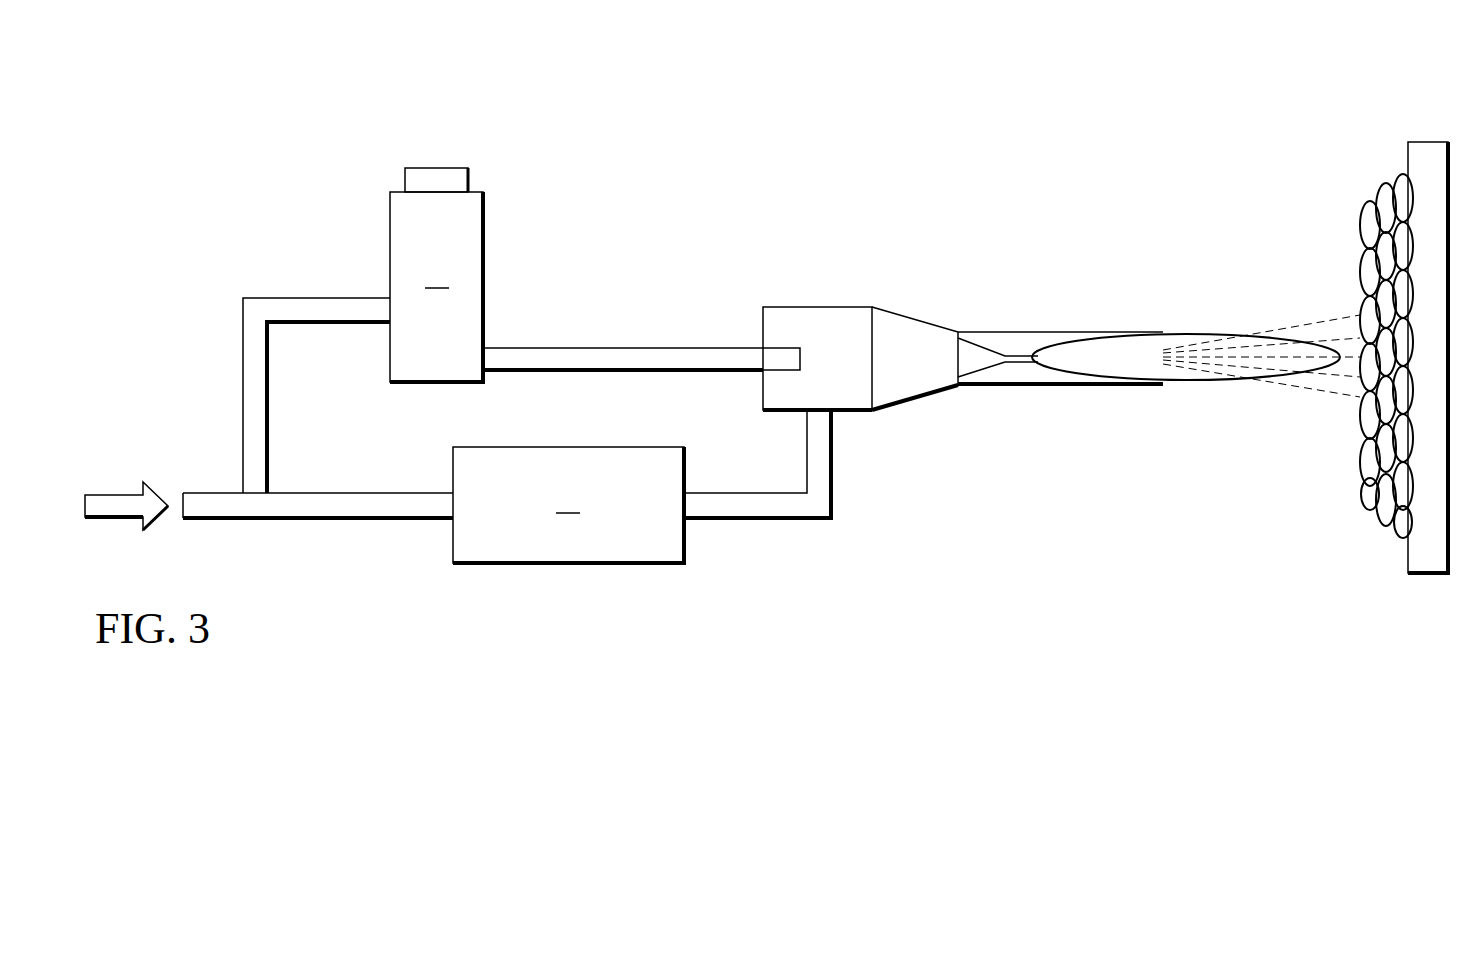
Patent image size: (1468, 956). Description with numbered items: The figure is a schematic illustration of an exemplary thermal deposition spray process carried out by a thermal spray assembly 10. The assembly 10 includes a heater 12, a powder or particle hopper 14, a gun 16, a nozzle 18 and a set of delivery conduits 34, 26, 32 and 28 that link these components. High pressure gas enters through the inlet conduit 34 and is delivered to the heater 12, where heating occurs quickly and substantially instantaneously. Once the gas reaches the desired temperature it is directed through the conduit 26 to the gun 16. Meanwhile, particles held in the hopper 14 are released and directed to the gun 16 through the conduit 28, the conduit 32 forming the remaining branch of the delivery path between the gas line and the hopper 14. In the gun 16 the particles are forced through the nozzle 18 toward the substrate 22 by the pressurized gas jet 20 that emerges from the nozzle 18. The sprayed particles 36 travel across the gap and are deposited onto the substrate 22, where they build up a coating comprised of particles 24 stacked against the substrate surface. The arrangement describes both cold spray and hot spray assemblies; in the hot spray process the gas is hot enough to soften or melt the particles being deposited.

The thermal spray assembly 10 is at (1142, 115).
The heater 12 is at (568, 505).
The powder or particle hopper 14 is at (436, 275).
The gun 16 is at (900, 393).
The nozzle 18 is at (1012, 378).
The pressurized gas jet 20 is at (1123, 347).
The substrate 22 is at (1408, 152).
The particles 24 is at (1364, 226).
The conduit 26 is at (765, 508).
The conduit 28 is at (623, 350).
The conduit 32 is at (243, 385).
The conduit 34 is at (303, 507).
The sprayed particles 36 is at (1318, 390).